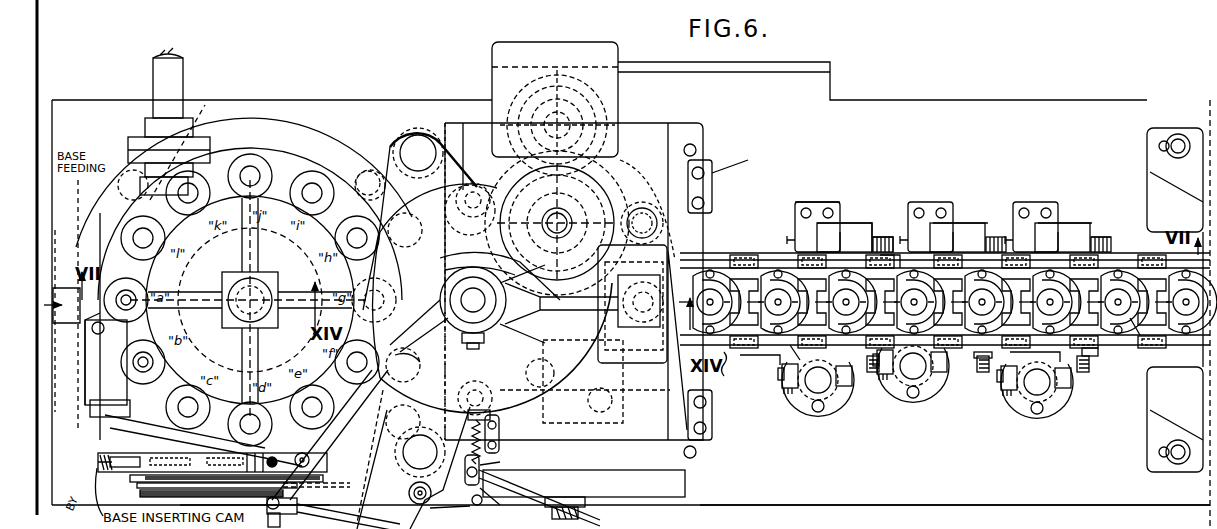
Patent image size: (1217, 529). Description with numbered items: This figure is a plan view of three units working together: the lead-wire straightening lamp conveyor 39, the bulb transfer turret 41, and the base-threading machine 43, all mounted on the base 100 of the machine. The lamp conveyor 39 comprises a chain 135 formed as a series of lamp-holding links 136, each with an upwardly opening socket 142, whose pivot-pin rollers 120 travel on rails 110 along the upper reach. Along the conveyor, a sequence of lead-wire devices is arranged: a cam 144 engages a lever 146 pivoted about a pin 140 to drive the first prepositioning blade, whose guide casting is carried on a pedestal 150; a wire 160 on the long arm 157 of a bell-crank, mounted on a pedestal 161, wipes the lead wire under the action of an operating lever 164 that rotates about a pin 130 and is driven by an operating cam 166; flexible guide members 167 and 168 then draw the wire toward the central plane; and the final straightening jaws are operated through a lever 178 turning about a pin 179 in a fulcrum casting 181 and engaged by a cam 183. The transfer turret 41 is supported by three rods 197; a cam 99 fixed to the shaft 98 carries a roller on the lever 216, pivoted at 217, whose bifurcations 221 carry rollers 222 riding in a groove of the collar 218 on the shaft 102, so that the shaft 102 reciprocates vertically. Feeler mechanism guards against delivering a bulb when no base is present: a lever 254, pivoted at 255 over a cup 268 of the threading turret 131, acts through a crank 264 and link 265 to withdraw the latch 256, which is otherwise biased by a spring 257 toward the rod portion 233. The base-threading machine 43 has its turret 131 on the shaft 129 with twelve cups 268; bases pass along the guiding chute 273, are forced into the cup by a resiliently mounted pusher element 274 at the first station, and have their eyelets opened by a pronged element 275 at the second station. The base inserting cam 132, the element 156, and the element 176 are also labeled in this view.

The base-threading machine 43 is at (303, 150).
The turret shaft 129 is at (276, 265).
The threading turret 131 is at (227, 205).
The cup 268 is at (270, 178).
The pusher element 274 is at (134, 303).
The pronged element 275 is at (155, 363).
The guiding chute 273 is at (100, 315).
The rods 197 is at (415, 152).
The cam 99 is at (523, 196).
The shaft 98 is at (542, 222).
The roller 222 is at (450, 278).
The shaft 102 is at (440, 258).
The collar 218 is at (445, 318).
The lever 216 is at (627, 206).
The pivot 217 is at (662, 212).
The transfer turret 41 is at (523, 413).
The rod portion 233 is at (487, 390).
The bifurcations 221 is at (413, 373).
The lever 254 is at (320, 443).
The pivot 255 is at (310, 478).
The latch 256 is at (492, 460).
The spring 257 is at (497, 484).
The crank 264 is at (462, 506).
The link 265 is at (500, 490).
The base inserting cam 132 is at (255, 517).
The lamp conveyor 39 is at (972, 396).
The rails 110 is at (730, 350).
The chain 135 is at (713, 268).
The lamp-holding links 136 is at (795, 283).
The flexible guide member 168 is at (846, 310).
The long arm 157 is at (902, 310).
The wire 160 is at (976, 292).
The work holder 156 is at (1118, 275).
The socket 142 is at (792, 345).
The pin 179 is at (812, 235).
The fulcrum casting 181 is at (835, 202).
The lever 178 is at (852, 222).
The cam 183 is at (884, 236).
The flexible guide member 167 is at (888, 256).
The pin 130 is at (925, 224).
The operating lever 164 is at (977, 236).
The pin 140 is at (1035, 210).
The lever 146 is at (1082, 226).
The cam 144 is at (1105, 240).
The lower station 176 is at (816, 388).
The pedestal 161 is at (906, 376).
The pedestal 150 is at (1035, 388).
The operating cam 166 is at (992, 370).
The roller 120 is at (1094, 358).
The base 100 is at (820, 500).